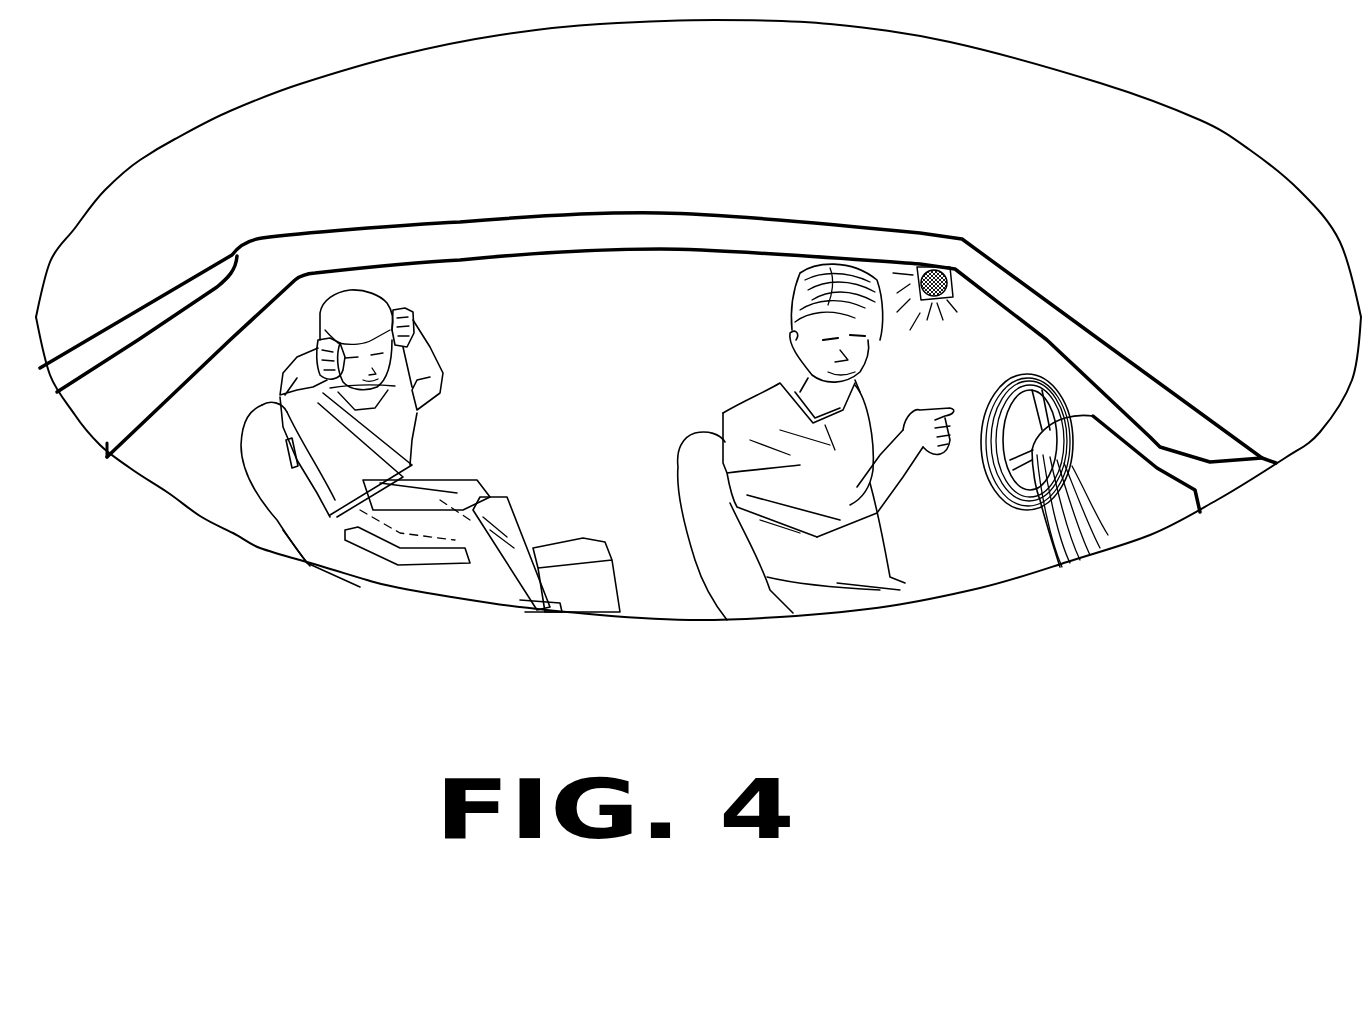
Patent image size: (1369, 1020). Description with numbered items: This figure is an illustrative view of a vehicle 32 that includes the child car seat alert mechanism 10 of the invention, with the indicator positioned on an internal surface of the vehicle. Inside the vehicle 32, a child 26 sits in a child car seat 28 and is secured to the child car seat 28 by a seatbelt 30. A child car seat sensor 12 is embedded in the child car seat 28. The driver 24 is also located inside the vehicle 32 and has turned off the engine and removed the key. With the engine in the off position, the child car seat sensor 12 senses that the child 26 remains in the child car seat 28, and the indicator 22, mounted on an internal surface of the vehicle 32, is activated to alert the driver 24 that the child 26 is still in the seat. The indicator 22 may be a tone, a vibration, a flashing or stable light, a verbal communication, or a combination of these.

The child car seat alert mechanism 10 is at (563, 304).
The child car seat sensor 12 is at (417, 458).
The indicator 22 is at (950, 267).
The driver 24 is at (847, 410).
The child 26 is at (373, 290).
The child car seat 28 is at (347, 550).
The seatbelt 30 is at (333, 503).
The vehicle 32 is at (197, 277).